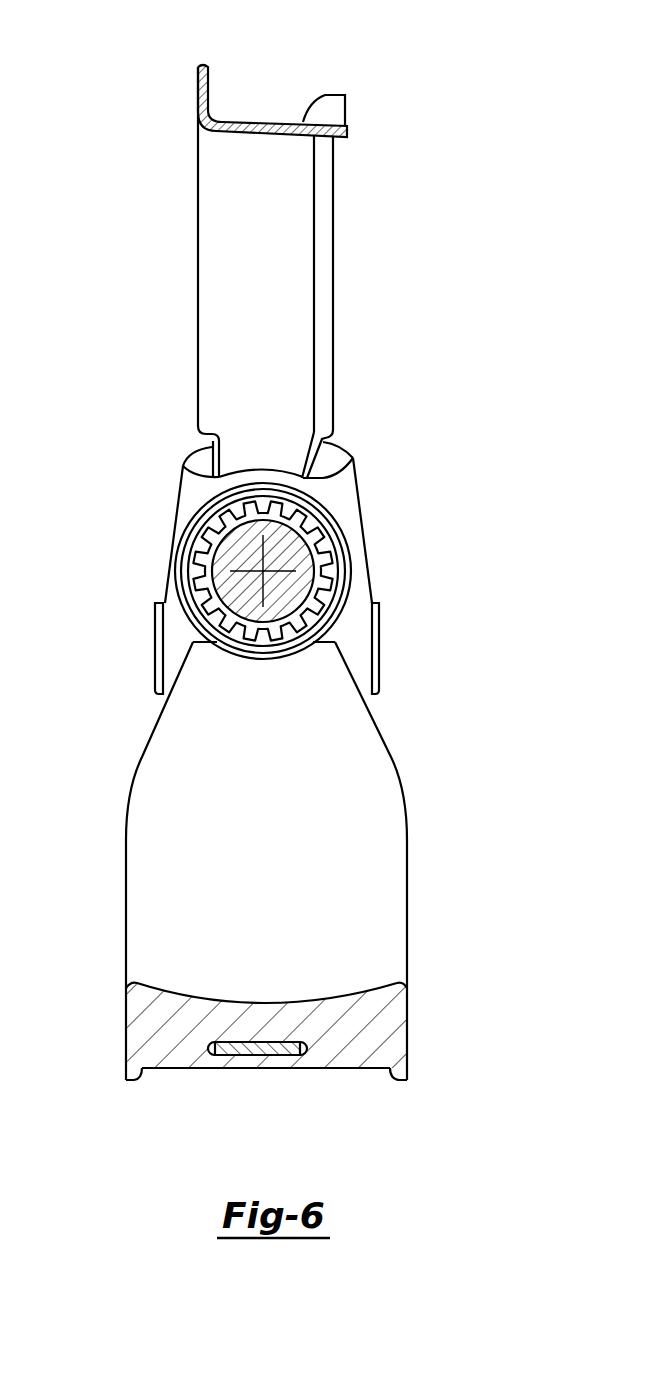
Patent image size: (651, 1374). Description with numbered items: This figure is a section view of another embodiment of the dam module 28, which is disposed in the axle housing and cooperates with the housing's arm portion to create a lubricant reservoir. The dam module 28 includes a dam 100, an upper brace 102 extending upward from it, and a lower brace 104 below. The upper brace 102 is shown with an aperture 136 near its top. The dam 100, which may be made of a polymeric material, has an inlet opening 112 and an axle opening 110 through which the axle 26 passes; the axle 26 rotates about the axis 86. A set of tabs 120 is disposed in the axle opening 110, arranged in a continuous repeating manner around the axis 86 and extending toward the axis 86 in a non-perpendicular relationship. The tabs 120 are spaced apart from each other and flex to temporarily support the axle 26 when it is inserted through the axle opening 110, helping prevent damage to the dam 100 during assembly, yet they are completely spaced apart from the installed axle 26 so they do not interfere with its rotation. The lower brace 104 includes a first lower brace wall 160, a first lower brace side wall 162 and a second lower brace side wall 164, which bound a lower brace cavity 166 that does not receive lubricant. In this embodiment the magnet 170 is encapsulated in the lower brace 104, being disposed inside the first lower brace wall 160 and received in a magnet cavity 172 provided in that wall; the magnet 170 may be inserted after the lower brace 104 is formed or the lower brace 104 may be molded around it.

The dam module 28 is at (158, 73).
The aperture 136 is at (337, 111).
The upper brace 102 is at (322, 210).
The inlet opening 112 is at (193, 464).
The axle opening 110 is at (206, 528).
The axis 86 is at (302, 532).
The axle 26 is at (343, 595).
The tabs 120 is at (252, 600).
The dam 100 is at (343, 620).
The lower brace 104 is at (407, 942).
The first lower brace wall 160 is at (345, 993).
The first lower brace side wall 162 is at (126, 1053).
The second lower brace side wall 164 is at (407, 1043).
The lower brace cavity 166 is at (350, 1081).
The magnet 170 is at (250, 1057).
The magnet cavity 172 is at (212, 1056).